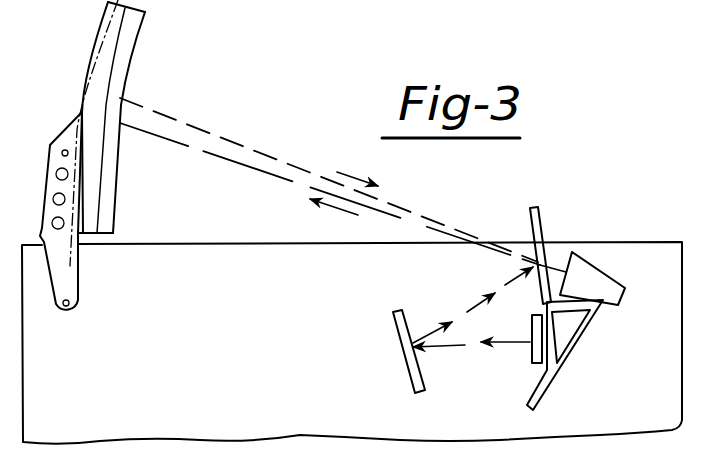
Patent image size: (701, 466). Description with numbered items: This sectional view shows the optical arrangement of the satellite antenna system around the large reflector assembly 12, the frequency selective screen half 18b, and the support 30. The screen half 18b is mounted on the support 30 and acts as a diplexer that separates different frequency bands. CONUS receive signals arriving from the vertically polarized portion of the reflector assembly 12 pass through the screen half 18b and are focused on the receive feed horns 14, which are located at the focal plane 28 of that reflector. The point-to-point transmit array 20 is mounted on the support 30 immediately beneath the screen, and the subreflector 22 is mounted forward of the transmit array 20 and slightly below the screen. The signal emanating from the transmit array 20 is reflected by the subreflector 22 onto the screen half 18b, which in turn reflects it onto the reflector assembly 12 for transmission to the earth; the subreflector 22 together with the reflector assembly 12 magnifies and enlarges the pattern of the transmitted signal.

The reflector assembly 12 is at (122, 50).
The receive feed horns 14 is at (600, 280).
The frequency selective screen half 18b is at (537, 220).
The transmit array 20 is at (540, 352).
The subreflector 22 is at (410, 347).
The focal plane 28 is at (563, 263).
The support 30 is at (558, 365).